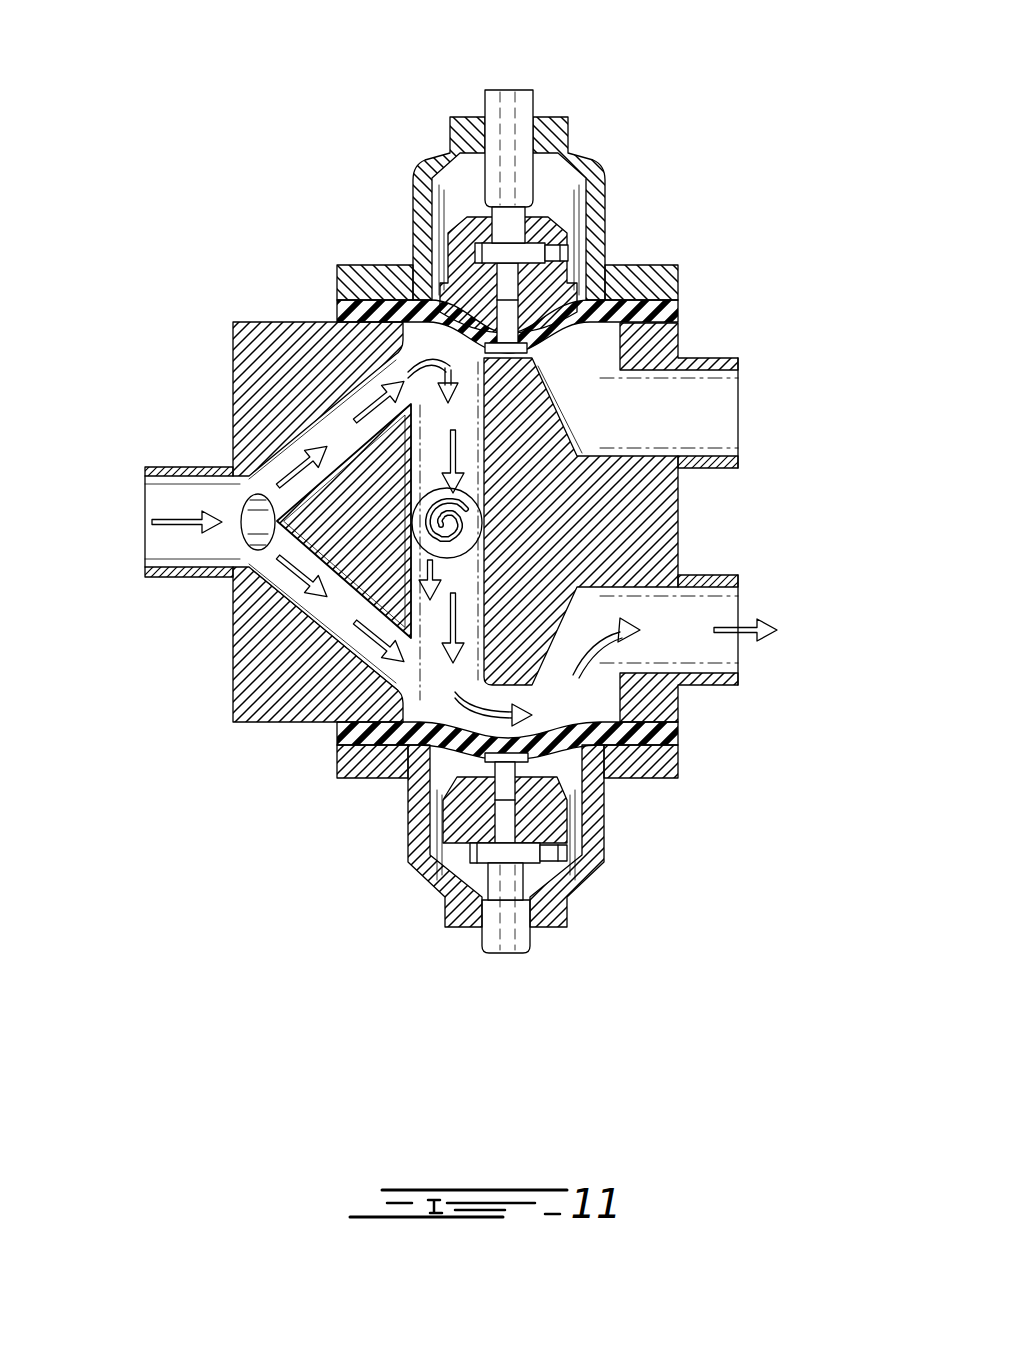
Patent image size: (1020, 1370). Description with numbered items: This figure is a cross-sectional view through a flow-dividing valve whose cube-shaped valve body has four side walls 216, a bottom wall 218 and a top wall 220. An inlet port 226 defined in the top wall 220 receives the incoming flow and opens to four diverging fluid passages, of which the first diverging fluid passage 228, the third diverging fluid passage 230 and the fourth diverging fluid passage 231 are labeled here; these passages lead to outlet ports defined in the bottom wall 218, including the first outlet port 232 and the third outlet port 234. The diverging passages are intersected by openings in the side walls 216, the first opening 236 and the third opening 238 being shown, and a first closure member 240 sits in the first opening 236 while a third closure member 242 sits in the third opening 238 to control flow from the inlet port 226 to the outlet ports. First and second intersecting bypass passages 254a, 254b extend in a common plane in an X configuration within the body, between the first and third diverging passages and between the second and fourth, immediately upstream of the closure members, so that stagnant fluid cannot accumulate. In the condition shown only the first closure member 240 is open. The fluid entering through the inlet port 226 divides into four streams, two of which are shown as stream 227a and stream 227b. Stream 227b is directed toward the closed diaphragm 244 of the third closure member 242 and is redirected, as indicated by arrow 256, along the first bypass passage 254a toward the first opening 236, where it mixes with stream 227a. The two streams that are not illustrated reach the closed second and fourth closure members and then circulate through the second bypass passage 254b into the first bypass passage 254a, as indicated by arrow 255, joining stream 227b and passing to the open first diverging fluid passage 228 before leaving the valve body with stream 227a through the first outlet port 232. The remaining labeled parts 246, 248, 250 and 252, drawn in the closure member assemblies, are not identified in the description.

The side walls 216 is at (307, 323).
The bottom wall 218 is at (680, 523).
The top wall 220 is at (233, 353).
The inlet port 226 is at (150, 530).
The stream 227a is at (333, 606).
The stream 227b is at (318, 455).
The first diverging fluid passage 228 is at (330, 618).
The third diverging fluid passage 230 is at (332, 420).
The fourth diverging fluid passage 231 is at (252, 508).
The first outlet port 232 is at (742, 650).
The third outlet port 234 is at (740, 387).
The first opening 236 is at (403, 783).
The third opening 238 is at (390, 320).
The first closure member 240 is at (384, 794).
The third closure member 242 is at (628, 253).
The diaphragm 244 is at (680, 312).
The nut 246 is at (570, 262).
The stem 248 is at (520, 120).
The cap flange 250 is at (467, 117).
The diaphragm 252 is at (547, 340).
The first bypass passage 254a is at (275, 718).
The second bypass passage 254b is at (577, 453).
The arrow 255 is at (470, 532).
The arrow 256 is at (560, 382).